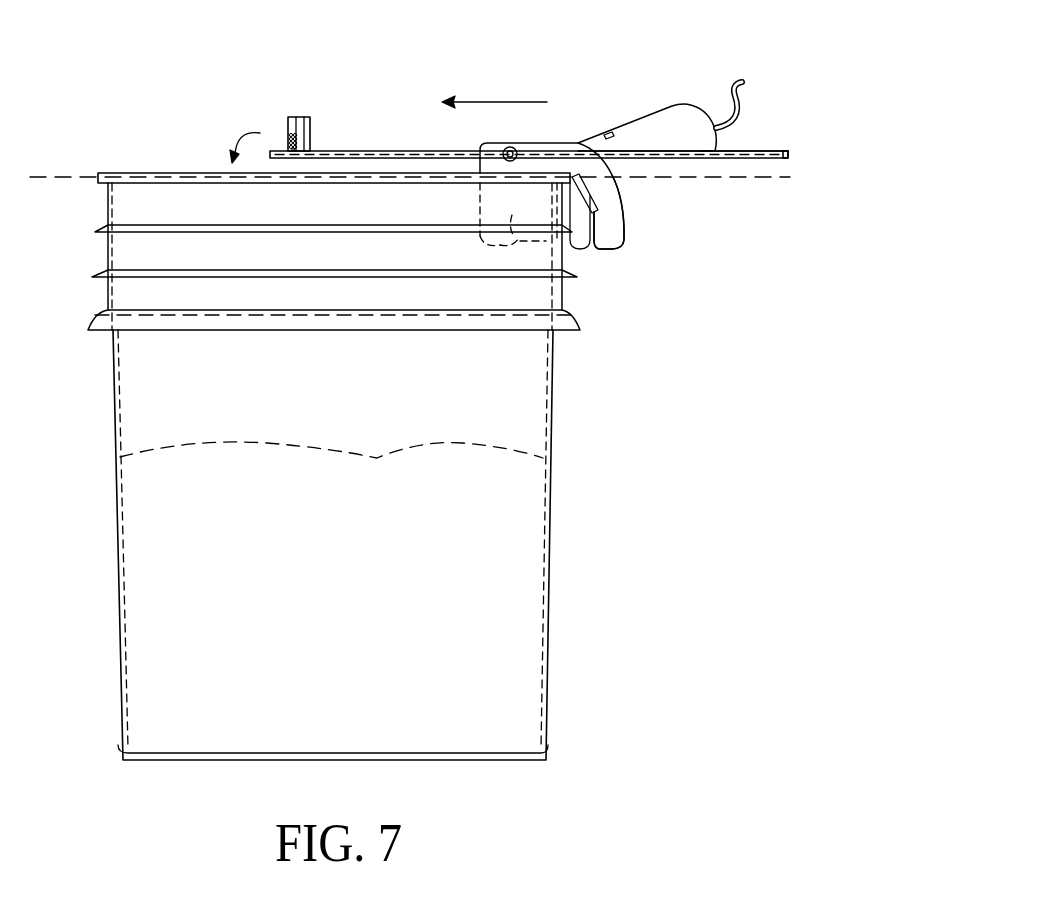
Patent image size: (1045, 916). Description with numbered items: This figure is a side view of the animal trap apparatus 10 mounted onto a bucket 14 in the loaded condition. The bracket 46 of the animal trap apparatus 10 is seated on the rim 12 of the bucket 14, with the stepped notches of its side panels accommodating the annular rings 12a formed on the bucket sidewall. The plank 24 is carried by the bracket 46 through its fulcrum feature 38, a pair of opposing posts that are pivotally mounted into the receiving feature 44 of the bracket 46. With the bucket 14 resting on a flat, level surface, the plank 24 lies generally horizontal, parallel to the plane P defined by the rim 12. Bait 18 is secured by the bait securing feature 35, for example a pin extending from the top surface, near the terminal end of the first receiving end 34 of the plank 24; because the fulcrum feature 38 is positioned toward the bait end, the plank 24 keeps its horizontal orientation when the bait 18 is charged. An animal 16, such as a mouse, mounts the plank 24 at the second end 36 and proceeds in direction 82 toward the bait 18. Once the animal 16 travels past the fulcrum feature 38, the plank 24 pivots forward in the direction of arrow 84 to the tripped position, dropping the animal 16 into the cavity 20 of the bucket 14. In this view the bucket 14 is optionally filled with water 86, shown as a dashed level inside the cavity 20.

The animal trap apparatus 10 is at (590, 98).
The rim 12 is at (307, 227).
The annular rings 12a is at (98, 228).
The bucket 14 is at (535, 395).
The animal 16 is at (695, 151).
The bait 18 is at (300, 117).
The cavity 20 is at (143, 406).
The plank 24 is at (782, 149).
The first receiving end 34 is at (318, 151).
The bait securing feature 35 is at (290, 134).
The second end 36 is at (790, 157).
The fulcrum feature 38 is at (517, 145).
The receiving feature 44 is at (507, 146).
The bracket 46 is at (627, 222).
The direction 82 is at (479, 102).
The arrow 84 is at (237, 131).
The water 86 is at (528, 558).
The plane P is at (742, 177).